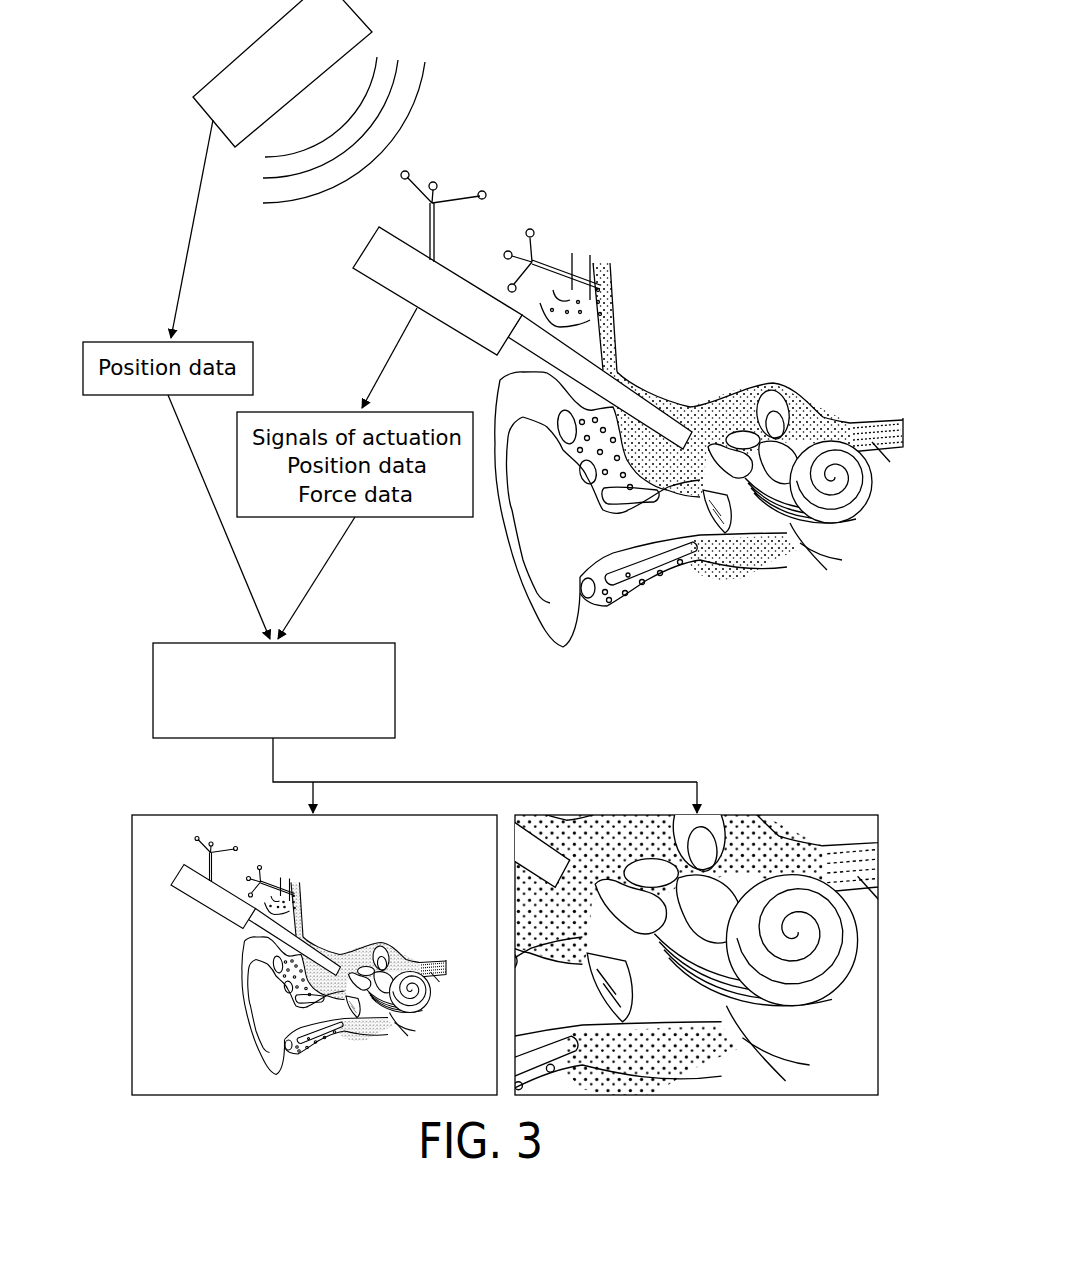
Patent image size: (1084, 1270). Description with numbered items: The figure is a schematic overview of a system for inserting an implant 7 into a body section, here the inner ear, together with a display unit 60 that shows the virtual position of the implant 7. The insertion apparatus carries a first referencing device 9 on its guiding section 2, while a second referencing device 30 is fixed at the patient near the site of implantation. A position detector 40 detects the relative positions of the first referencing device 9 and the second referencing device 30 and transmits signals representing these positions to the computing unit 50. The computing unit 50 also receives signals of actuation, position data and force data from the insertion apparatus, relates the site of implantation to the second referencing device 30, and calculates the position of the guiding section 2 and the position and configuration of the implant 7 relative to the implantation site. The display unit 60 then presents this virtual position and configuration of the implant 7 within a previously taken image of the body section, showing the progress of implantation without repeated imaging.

The position detector 40 is at (312, 59).
The first referencing device 9 is at (448, 176).
The second referencing device 30 is at (546, 224).
The guiding section 2 is at (518, 354).
The implant 7 is at (870, 500).
The computing unit 50 is at (147, 685).
The display unit 60 is at (203, 809).